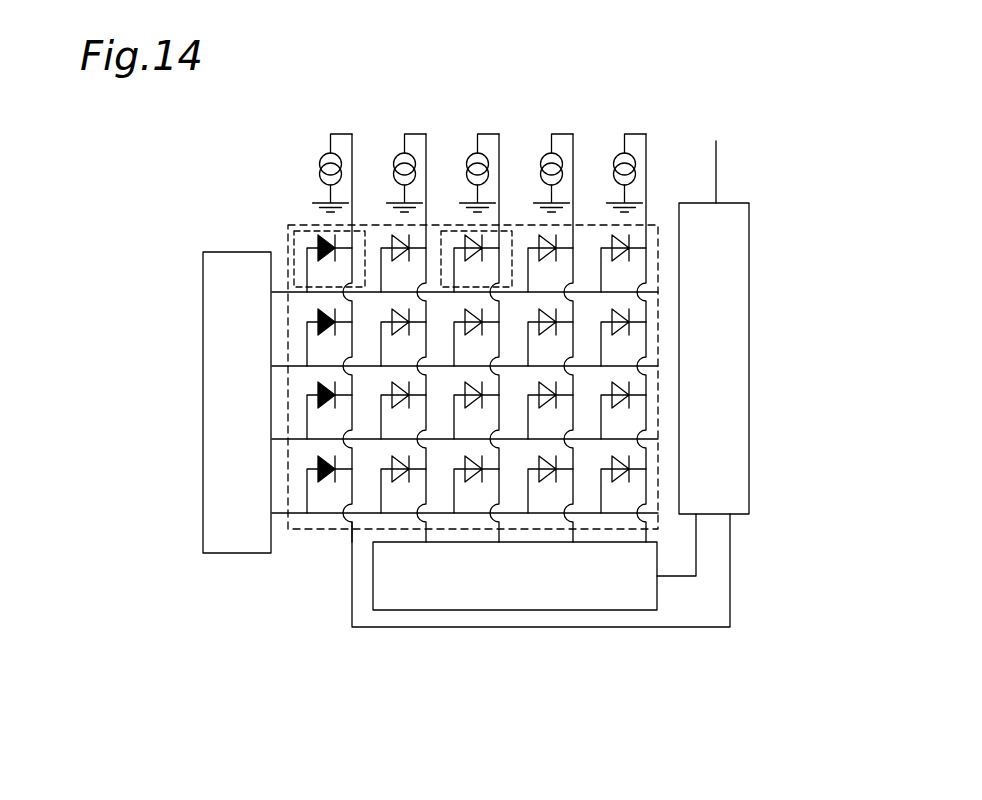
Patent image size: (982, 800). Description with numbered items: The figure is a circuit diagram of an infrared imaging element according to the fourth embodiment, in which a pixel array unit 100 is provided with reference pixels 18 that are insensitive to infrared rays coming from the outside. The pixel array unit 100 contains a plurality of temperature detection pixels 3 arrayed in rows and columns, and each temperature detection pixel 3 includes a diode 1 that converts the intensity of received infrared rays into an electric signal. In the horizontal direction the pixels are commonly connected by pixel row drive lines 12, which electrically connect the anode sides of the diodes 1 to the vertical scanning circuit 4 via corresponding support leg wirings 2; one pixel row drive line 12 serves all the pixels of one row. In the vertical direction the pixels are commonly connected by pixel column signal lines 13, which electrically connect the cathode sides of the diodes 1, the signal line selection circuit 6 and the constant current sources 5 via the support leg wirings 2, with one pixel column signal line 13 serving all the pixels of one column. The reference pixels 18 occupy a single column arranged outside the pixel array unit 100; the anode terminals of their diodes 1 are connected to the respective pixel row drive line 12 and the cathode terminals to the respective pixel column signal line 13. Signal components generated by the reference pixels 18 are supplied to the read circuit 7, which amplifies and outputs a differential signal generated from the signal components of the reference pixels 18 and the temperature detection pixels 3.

The pixel array unit 100 is at (300, 223).
The diode 1 is at (317, 237).
The support leg wiring 2 is at (308, 276).
The temperature detection pixel 3 is at (456, 230).
The reference pixel 18 is at (364, 232).
The vertical scanning circuit 4 is at (228, 252).
The constant current source 5 is at (612, 158).
The pixel column signal line 13 is at (648, 145).
The read circuit 7 is at (750, 320).
The signal line selection circuit 6 is at (515, 610).
The pixel row drive line 12 is at (280, 513).